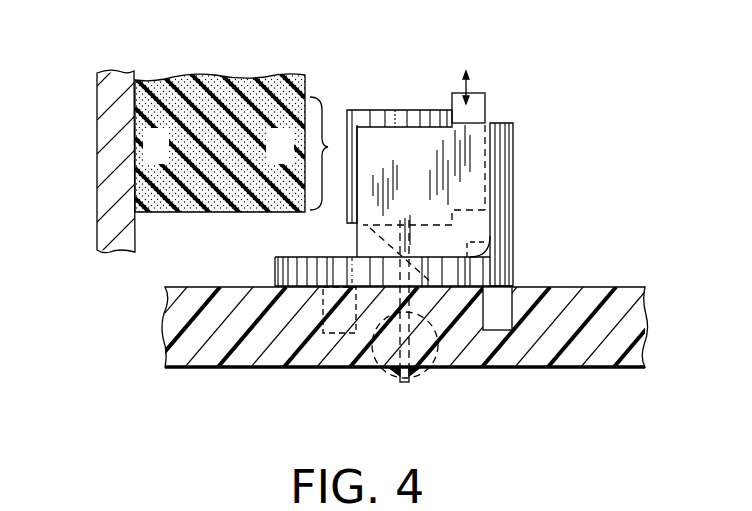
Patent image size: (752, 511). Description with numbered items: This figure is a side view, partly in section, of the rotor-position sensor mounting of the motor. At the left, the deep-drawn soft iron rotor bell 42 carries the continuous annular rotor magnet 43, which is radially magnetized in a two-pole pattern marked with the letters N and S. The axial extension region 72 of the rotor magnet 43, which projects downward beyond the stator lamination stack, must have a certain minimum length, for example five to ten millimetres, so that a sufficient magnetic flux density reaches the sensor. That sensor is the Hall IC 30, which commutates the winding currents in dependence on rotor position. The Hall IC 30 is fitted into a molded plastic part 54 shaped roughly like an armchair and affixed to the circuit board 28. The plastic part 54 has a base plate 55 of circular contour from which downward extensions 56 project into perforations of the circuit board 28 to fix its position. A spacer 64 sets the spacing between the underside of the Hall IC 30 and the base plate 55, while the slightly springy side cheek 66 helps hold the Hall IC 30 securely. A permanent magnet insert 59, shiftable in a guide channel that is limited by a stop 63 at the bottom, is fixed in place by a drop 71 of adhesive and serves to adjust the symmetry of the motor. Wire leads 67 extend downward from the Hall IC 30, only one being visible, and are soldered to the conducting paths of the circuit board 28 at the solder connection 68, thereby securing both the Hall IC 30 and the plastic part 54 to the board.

The circuit board 28 is at (232, 358).
The Hall IC 30 is at (381, 112).
The rotor bell 42 is at (110, 152).
The rotor magnet 43 is at (263, 74).
The molded plastic part 54 is at (497, 180).
The base plate 55 is at (282, 270).
The downward extensions 56 is at (332, 333).
The permanent magnet insert 59 is at (485, 95).
The stop 63 is at (493, 230).
The spacer 64 is at (365, 243).
The side cheek 66 is at (407, 137).
The wire leads 67 is at (433, 368).
The solder connection 68 is at (398, 378).
The drop of adhesive 71 is at (490, 112).
The axial extension region 72 is at (323, 143).